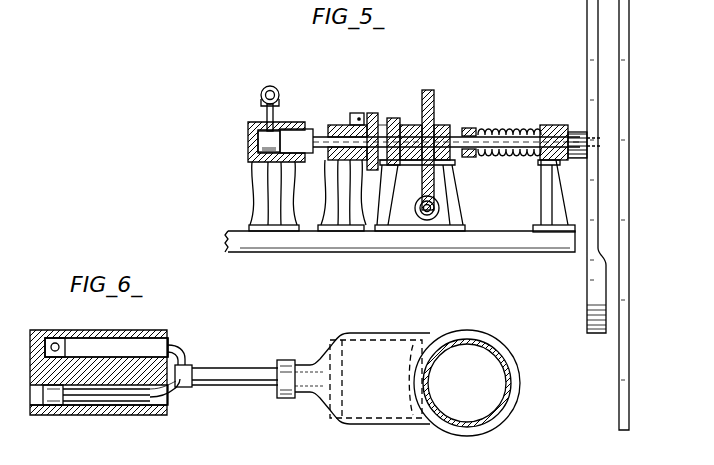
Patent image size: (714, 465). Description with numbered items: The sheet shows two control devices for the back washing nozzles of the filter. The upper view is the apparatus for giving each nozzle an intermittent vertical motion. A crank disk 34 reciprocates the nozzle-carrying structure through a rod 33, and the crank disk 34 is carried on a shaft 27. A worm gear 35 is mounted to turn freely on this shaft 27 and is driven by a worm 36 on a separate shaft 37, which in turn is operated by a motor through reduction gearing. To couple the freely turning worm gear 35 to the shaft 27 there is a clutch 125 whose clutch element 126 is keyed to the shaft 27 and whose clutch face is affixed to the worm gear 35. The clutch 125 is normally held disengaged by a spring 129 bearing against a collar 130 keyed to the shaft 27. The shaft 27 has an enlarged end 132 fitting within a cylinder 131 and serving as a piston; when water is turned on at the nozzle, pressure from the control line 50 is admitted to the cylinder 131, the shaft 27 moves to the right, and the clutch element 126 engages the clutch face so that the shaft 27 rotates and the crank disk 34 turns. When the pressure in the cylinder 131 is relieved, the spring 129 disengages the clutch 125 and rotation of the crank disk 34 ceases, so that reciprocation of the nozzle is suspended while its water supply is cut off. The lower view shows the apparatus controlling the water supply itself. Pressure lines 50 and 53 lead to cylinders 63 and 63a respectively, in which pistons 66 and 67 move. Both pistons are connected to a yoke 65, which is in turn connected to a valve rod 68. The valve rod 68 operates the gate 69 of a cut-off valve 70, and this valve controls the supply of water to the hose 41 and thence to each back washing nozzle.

In FIG. 5, the shaft 27 is at (546, 128).
In FIG. 5, the rod 33 is at (629, 55).
In FIG. 5, the crank disk 34 is at (587, 45).
In FIG. 5, the worm gear 35 is at (428, 90).
In FIG. 5, the worm 36 is at (440, 205).
In FIG. 5, the shaft 37 is at (441, 211).
In FIG. 6, the hose 41 is at (470, 340).
In FIG. 5, the pressure line 50 is at (272, 85).
In FIG. 6, the pressure line 50 is at (53, 343).
In FIG. 6, the pressure line 53 is at (142, 400).
In FIG. 6, the cylinder 63 is at (112, 332).
In FIG. 6, the cylinder 63a is at (92, 412).
In FIG. 6, the yoke 65 is at (190, 363).
In FIG. 6, the piston 66 is at (147, 345).
In FIG. 6, the piston 67 is at (52, 400).
In FIG. 6, the valve rod 68 is at (238, 386).
In FIG. 6, the gate 69 is at (409, 353).
In FIG. 6, the cut-off valve 70 is at (445, 322).
In FIG. 5, the clutch 125 is at (386, 108).
In FIG. 5, the clutch element 126 is at (383, 165).
In FIG. 5, the spring 129 is at (511, 128).
In FIG. 5, the collar 130 is at (472, 128).
In FIG. 5, the cylinder 131 is at (248, 137).
In FIG. 5, the enlarged end 132 is at (303, 134).